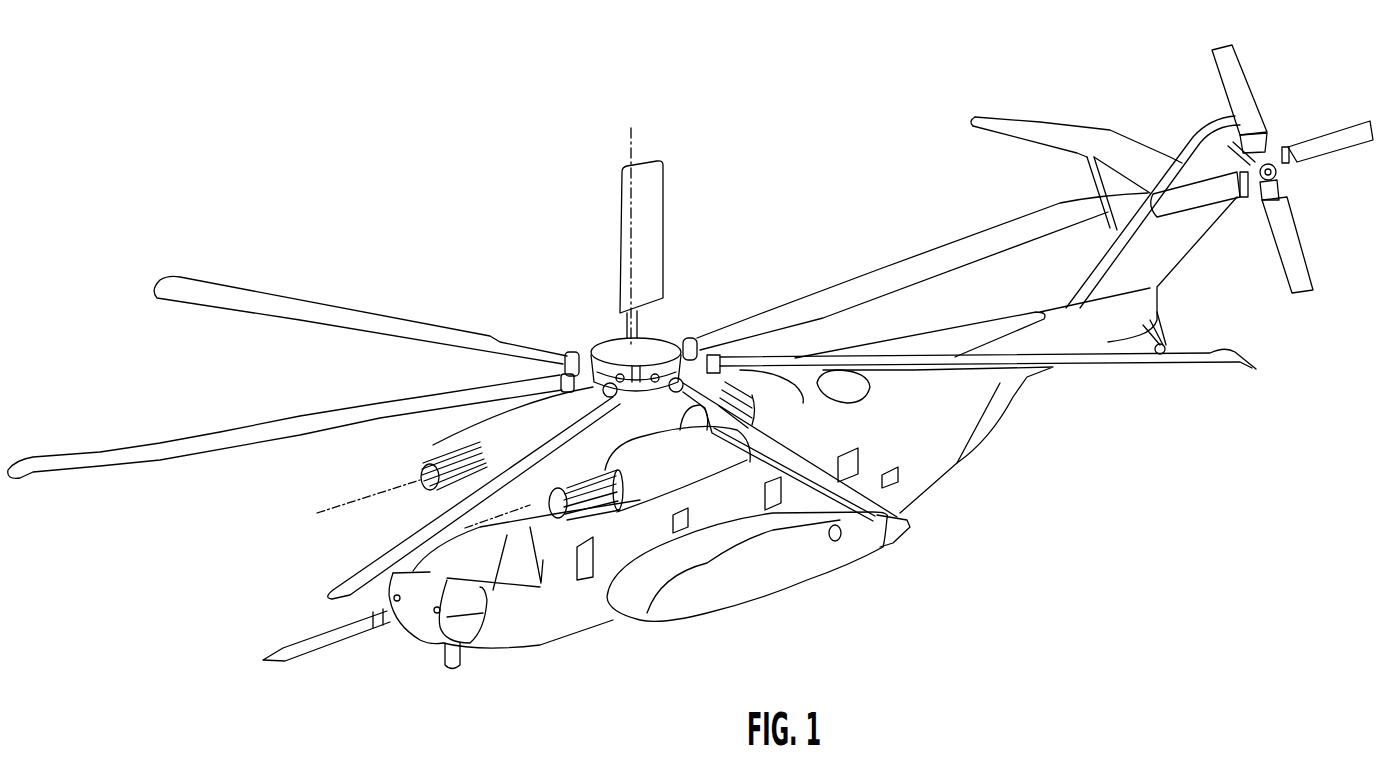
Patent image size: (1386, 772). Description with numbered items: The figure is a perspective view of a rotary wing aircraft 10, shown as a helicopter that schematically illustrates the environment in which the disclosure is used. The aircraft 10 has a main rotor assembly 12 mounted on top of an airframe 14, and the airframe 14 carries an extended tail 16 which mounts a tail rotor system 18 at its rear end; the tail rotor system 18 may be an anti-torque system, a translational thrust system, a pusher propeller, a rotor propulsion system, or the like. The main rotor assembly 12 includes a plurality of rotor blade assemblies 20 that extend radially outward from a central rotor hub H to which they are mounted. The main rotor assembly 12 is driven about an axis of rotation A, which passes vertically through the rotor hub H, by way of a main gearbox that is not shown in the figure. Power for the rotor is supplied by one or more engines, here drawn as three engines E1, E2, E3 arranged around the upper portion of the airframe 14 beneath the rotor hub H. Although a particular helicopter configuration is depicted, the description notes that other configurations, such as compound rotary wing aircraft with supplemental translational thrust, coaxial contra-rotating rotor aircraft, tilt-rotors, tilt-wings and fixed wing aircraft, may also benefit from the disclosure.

The rotary wing aircraft 10 is at (835, 168).
The main rotor assembly 12 is at (594, 314).
The airframe 14 is at (922, 483).
The extended tail 16 is at (1007, 326).
The tail rotor system 18 is at (1302, 187).
The rotor blade assemblies 20 is at (278, 306).
The axis of rotation A is at (631, 150).
The rotor hub H is at (577, 357).
The engine E1 is at (688, 490).
The engine E2 is at (800, 401).
The engine E3 is at (478, 428).